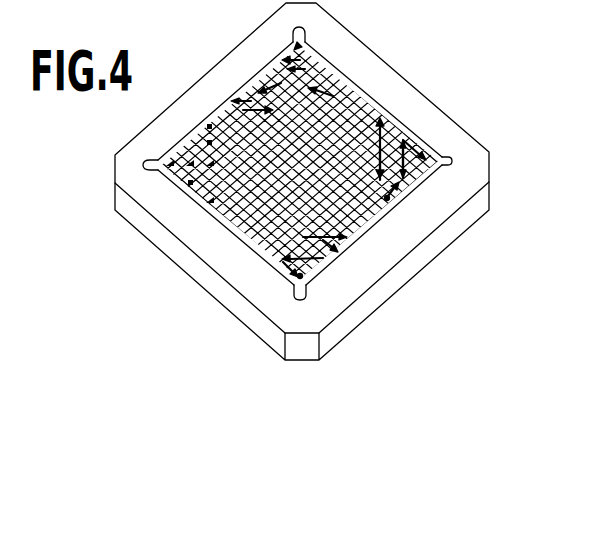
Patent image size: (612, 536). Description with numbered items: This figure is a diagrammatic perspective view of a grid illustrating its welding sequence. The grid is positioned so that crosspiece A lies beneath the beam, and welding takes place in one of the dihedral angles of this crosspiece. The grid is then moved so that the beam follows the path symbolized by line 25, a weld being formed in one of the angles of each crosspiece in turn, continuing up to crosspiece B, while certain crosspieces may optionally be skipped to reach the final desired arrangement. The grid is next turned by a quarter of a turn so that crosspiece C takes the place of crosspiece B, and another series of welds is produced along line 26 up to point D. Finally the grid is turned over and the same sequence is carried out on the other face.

The crosspiece A is at (300, 48).
The crosspiece B is at (305, 293).
The crosspiece C is at (450, 165).
The point D is at (143, 168).
The line 25 is at (330, 100).
The line 26 is at (403, 183).